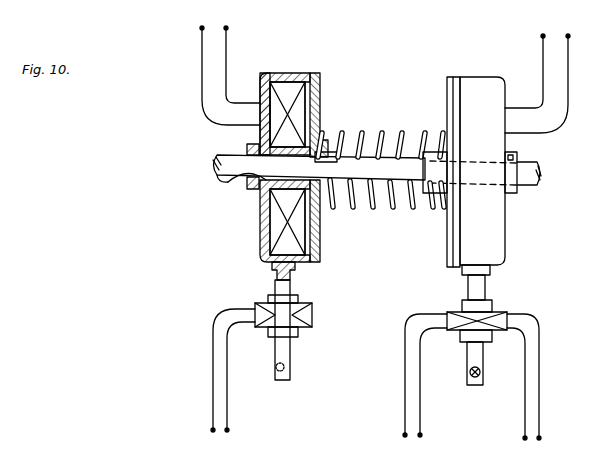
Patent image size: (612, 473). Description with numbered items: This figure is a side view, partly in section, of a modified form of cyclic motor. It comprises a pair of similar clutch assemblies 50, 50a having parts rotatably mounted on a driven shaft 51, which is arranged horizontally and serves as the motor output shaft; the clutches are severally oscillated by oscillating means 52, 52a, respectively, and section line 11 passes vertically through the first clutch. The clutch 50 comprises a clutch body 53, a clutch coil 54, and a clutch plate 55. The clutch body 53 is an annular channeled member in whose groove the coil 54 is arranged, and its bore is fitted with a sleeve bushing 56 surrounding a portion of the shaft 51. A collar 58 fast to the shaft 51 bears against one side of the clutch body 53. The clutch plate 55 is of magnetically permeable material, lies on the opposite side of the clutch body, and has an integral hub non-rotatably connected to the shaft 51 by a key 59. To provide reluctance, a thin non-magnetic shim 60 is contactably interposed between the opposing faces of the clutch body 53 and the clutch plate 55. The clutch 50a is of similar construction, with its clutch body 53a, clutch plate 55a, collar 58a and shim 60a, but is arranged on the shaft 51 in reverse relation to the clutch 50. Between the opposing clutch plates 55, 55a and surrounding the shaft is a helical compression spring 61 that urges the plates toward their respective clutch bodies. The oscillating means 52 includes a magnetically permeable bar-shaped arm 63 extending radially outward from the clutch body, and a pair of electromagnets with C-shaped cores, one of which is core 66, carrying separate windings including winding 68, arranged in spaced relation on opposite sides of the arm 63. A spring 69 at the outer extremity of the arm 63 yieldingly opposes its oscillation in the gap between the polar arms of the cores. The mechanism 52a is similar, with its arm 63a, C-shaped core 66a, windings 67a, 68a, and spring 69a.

The section line 11 is at (307, 255).
The clutch assembly 50 is at (275, 90).
The driven shaft 51 is at (537, 164).
The oscillating means 52 is at (278, 354).
The clutch body 53 is at (284, 73).
The clutch coil 54 is at (262, 94).
The clutch plate 55 is at (320, 108).
The sleeve bushing 56 is at (246, 188).
The collar 58 is at (257, 194).
The key 59 is at (333, 152).
The shim 60 is at (321, 83).
The helical compression spring 61 is at (382, 202).
The arm 63 is at (275, 348).
The C-shaped core 66 is at (299, 336).
The winding 68 is at (313, 310).
The spring 69 is at (276, 370).
The clutch assembly 50a is at (489, 152).
The clutch body 53a is at (478, 77).
The clutch plate 55a is at (448, 105).
The collar 58a is at (511, 193).
The shim 60a is at (455, 77).
The oscillating means 52a is at (485, 357).
The arm 63a is at (467, 357).
The C-shaped core 66a is at (462, 304).
The winding 67a is at (468, 288).
The winding 68a is at (493, 331).
The spring 69a is at (470, 374).